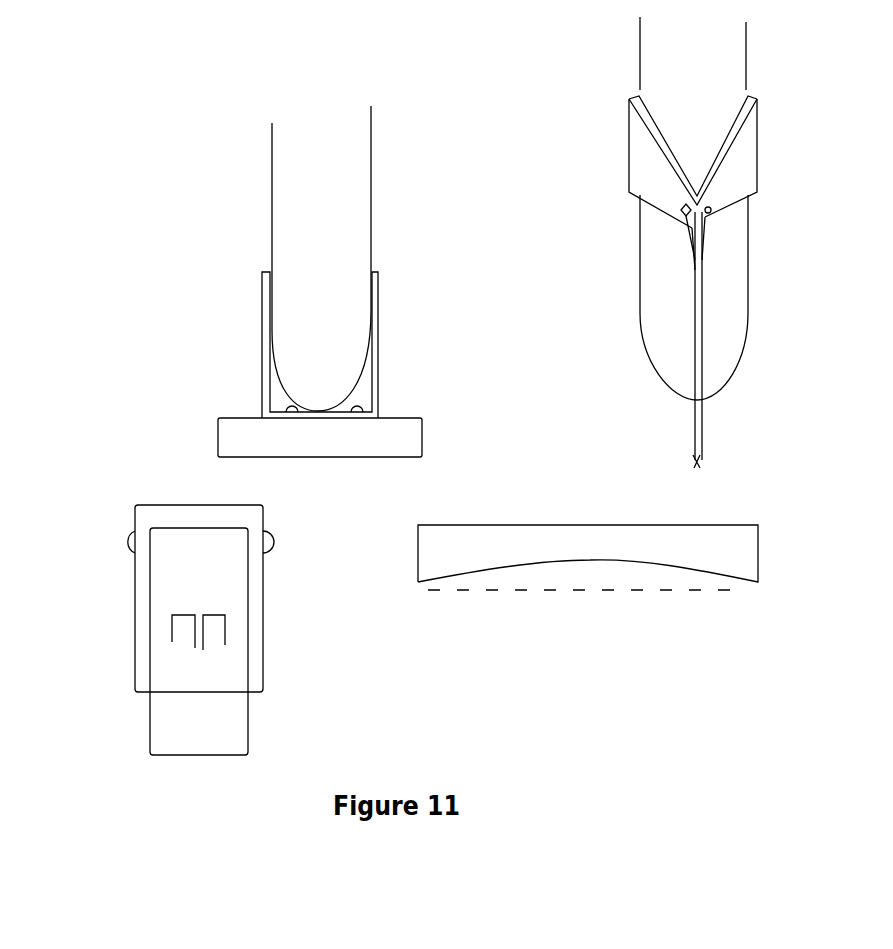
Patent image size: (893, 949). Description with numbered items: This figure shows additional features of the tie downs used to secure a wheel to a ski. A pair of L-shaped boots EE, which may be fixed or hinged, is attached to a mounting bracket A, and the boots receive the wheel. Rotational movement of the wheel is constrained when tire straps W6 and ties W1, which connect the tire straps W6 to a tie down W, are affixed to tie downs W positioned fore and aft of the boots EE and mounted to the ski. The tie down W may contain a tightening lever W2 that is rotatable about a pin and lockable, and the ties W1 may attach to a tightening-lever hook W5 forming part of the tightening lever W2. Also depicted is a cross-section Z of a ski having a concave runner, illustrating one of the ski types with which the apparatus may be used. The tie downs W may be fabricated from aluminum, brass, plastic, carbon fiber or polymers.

The L-shaped boots EE is at (262, 382).
The mounting bracket A is at (218, 442).
The tire straps W6 is at (628, 157).
The ties W1 is at (703, 418).
The tightening lever W2 is at (180, 595).
The tie down W is at (263, 640).
The tightening-lever hook W5 is at (195, 648).
The cross-section Z is at (418, 562).